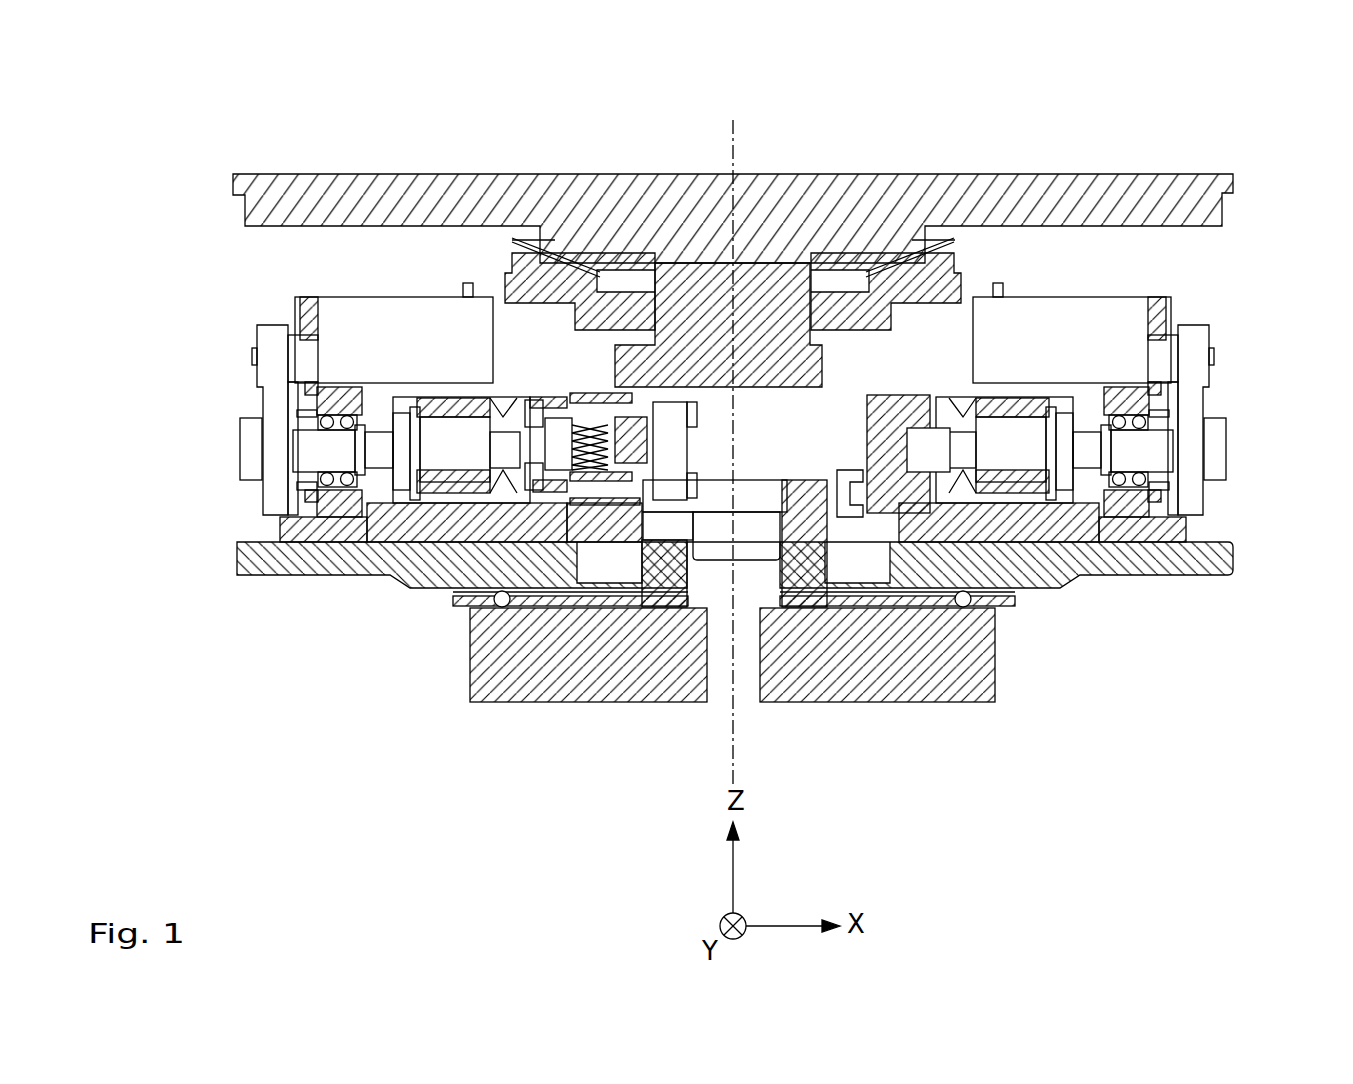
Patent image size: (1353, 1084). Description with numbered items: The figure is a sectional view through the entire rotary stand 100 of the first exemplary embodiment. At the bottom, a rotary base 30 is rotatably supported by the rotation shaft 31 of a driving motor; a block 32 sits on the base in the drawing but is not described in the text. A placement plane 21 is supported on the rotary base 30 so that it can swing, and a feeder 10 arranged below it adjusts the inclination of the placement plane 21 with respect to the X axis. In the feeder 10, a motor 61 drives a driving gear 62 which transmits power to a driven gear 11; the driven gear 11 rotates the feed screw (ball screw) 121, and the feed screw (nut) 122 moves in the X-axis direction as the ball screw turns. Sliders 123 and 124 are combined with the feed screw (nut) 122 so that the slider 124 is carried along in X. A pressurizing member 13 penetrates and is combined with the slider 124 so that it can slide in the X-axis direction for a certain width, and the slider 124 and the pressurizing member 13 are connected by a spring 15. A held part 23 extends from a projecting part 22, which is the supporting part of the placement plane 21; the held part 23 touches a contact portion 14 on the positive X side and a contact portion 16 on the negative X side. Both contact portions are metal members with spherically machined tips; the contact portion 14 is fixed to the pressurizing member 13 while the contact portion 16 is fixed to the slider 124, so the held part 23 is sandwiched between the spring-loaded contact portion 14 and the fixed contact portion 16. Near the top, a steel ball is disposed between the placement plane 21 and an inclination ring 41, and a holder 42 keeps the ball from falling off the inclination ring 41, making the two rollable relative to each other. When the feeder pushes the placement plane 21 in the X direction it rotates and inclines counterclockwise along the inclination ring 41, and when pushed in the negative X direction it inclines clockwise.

The rotary stand 100 is at (1167, 88).
The feeder 10 is at (190, 350).
The driven gear 11 is at (245, 427).
The pressurizing member 13 is at (605, 482).
The contact portion 14 is at (650, 442).
The spring 15 is at (562, 408).
The contact portion 16 is at (605, 442).
The placement plane 21 is at (950, 174).
The projecting part 22 is at (767, 292).
The held part 23 is at (637, 445).
The rotary base 30 is at (1217, 560).
The rotation shaft 31 is at (713, 677).
The support block 32 is at (313, 533).
The inclination ring 41 is at (945, 263).
The holder 42 is at (935, 241).
The motor 61 is at (345, 293).
The driving gear 62 is at (257, 335).
The feed screw (ball screw) 121 is at (372, 450).
The feed screw (nut) 122 is at (450, 455).
The slider 123 is at (492, 412).
The slider 124 is at (657, 478).